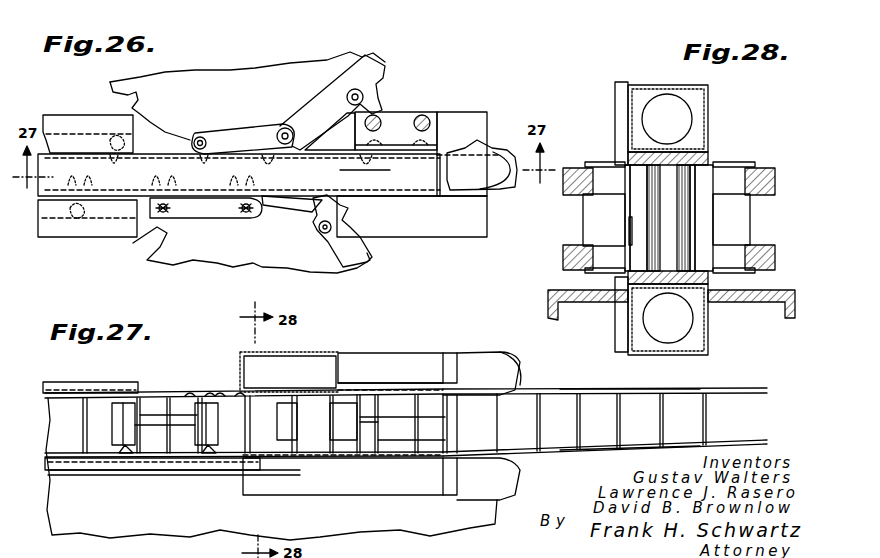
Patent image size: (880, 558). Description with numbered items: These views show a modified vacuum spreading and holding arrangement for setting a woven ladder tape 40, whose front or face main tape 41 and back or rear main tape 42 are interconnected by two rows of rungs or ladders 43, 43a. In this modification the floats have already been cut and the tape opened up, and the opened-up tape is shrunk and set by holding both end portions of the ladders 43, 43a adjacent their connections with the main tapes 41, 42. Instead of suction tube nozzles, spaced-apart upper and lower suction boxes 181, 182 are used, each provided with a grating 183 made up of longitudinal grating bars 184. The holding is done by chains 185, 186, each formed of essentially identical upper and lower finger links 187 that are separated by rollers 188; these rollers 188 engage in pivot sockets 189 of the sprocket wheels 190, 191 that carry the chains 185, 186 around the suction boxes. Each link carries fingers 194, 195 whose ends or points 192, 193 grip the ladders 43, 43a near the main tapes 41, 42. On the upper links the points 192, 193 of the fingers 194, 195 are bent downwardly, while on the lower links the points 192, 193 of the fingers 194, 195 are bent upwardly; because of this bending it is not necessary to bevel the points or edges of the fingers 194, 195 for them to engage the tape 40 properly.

In FIG. 27, the ladder tape 40 is at (744, 390).
In FIG. 27, the front or face main tape 41 is at (603, 392).
In FIG. 27, the back or rear main tape 42 is at (606, 452).
In FIG. 26, the rungs or ladders 43 is at (375, 165).
In FIG. 27, the rungs or ladders 43 is at (200, 415).
In FIG. 28, the rungs or ladders 43 is at (632, 205).
In FIG. 26, the rungs or ladders 43a is at (335, 182).
In FIG. 27, the rungs or ladders 43a is at (264, 428).
In FIG. 28, the rungs or ladders 43a is at (700, 206).
In FIG. 26, the upper suction box 181 is at (436, 190).
In FIG. 27, the upper suction box 181 is at (392, 355).
In FIG. 28, the upper suction box 181 is at (700, 100).
In FIG. 27, the lower suction box 182 is at (364, 488).
In FIG. 28, the lower suction box 182 is at (700, 334).
In FIG. 27, the grating 183 is at (402, 387).
In FIG. 28, the grating 183 is at (680, 150).
In FIG. 28, the longitudinal grating bars 184 is at (632, 146).
In FIG. 26, the chain 185 is at (348, 244).
In FIG. 26, the chain 186 is at (383, 80).
In FIG. 26, the finger links 187 is at (326, 112).
In FIG. 27, the rollers 188 is at (135, 420).
In FIG. 28, the rollers 188 is at (598, 230).
In FIG. 26, the pivot sockets 189 is at (121, 92).
In FIG. 27, the pivot sockets 189 is at (90, 387).
In FIG. 26, the sprocket wheel 190 is at (196, 265).
In FIG. 27, the sprocket wheel 190 is at (271, 469).
In FIG. 26, the sprocket wheel 191 is at (246, 40).
In FIG. 26, the ends or points of the fingers 192 is at (395, 128).
In FIG. 27, the ends or points of the fingers 192 is at (200, 425).
In FIG. 28, the ends or points of the fingers 192 is at (672, 200).
In FIG. 26, the ends or points of the fingers 193 is at (383, 108).
In FIG. 27, the ends or points of the fingers 193 is at (224, 396).
In FIG. 26, the finger 194 is at (360, 206).
In FIG. 28, the finger 194 is at (628, 162).
In FIG. 26, the finger 195 is at (377, 97).